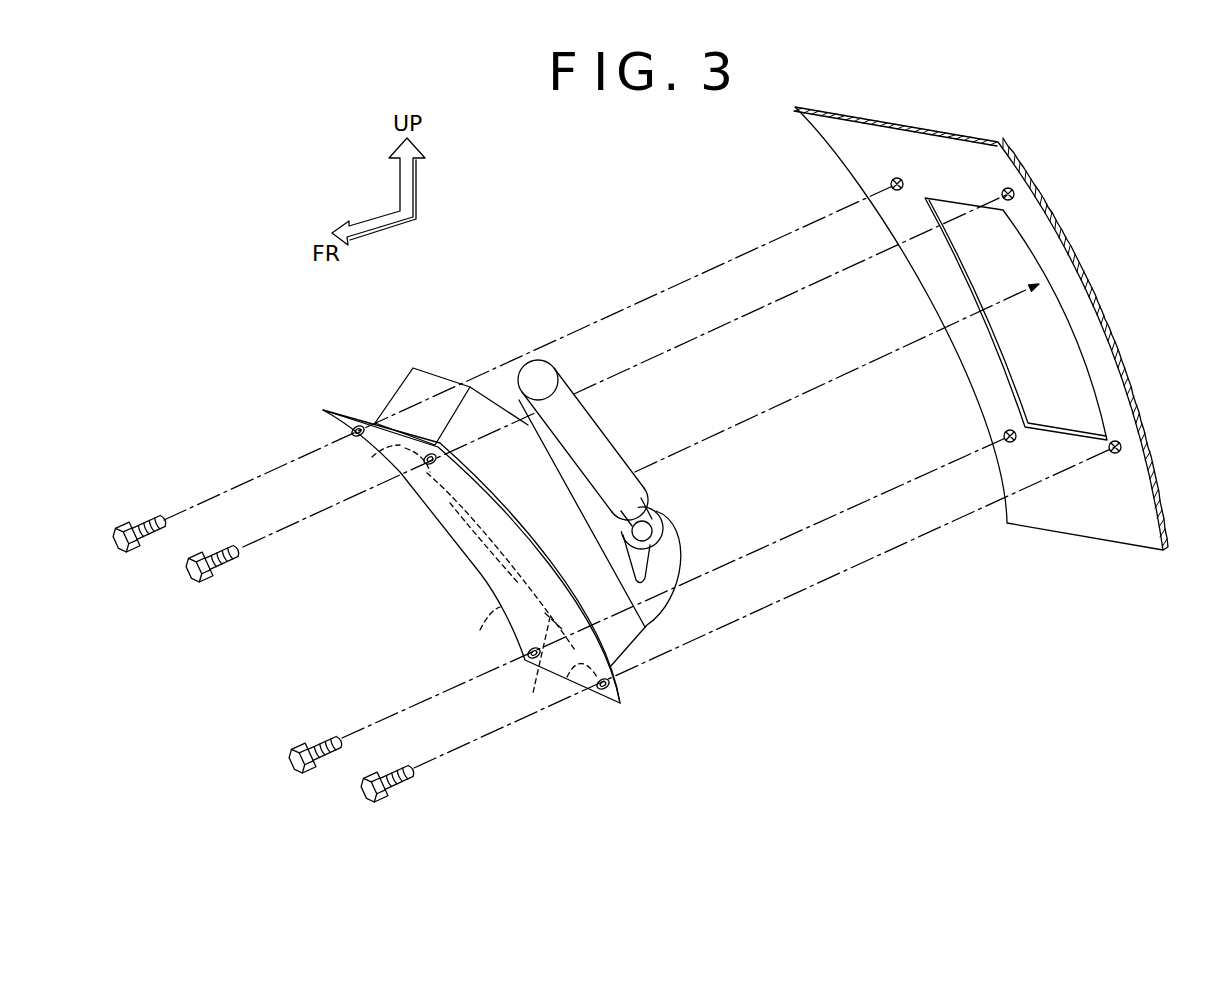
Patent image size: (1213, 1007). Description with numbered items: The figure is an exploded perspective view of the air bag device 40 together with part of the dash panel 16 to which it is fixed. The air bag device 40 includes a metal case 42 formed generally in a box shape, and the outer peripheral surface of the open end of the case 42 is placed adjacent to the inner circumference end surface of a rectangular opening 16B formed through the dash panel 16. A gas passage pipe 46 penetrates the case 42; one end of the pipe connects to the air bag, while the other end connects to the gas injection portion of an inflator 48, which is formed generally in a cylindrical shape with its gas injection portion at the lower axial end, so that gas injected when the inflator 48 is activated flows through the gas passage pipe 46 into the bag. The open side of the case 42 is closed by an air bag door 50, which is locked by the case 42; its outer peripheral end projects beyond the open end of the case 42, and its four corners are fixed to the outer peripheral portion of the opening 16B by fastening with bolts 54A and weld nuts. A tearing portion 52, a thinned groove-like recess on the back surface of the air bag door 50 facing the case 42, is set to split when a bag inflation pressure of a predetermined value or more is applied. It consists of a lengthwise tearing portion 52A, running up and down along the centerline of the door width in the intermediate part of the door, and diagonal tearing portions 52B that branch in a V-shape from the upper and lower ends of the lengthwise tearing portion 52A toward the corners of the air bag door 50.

The dash panel 16 is at (1072, 570).
The rectangular opening 16B is at (976, 275).
The air bag device 40 is at (611, 762).
The case 42 is at (424, 368).
The gas passage pipe 46 is at (677, 545).
The inflator 48 is at (598, 427).
The air bag door 50 is at (477, 552).
The tearing portion 52 is at (522, 592).
The lengthwise tearing portion 52A is at (458, 505).
The diagonal tearing portions 52B is at (385, 463).
The bolts 54A is at (193, 570).